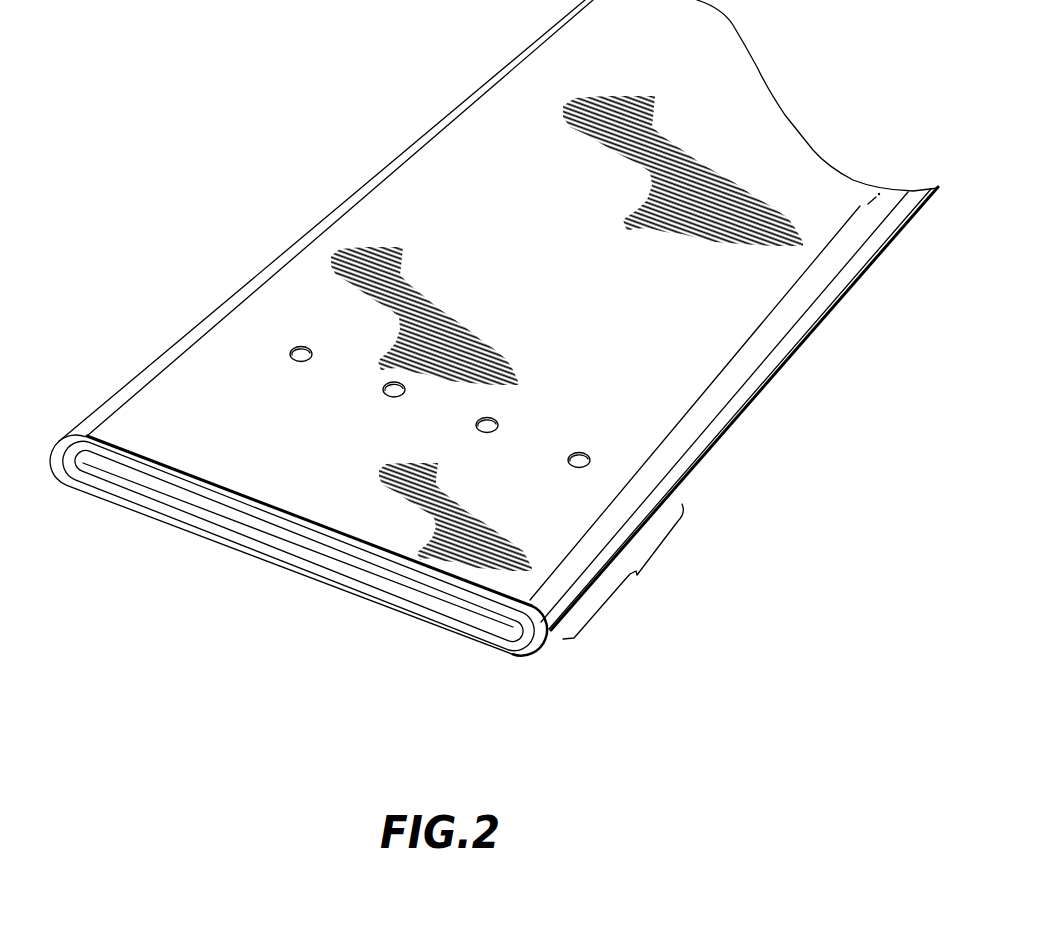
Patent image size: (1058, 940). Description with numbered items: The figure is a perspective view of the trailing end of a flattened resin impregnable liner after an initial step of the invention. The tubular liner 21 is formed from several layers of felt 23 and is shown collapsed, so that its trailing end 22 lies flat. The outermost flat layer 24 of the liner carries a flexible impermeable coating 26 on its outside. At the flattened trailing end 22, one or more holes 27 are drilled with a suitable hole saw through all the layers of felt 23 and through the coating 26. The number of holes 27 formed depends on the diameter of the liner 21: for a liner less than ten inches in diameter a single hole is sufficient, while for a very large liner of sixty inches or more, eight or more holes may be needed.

The tubular liner 21 is at (752, 412).
The trailing end 22 is at (685, 583).
The layers of felt 23 is at (507, 640).
The outermost flat layer 24 is at (541, 637).
The flexible impermeable coating 26 is at (767, 300).
The holes 27 is at (590, 457).